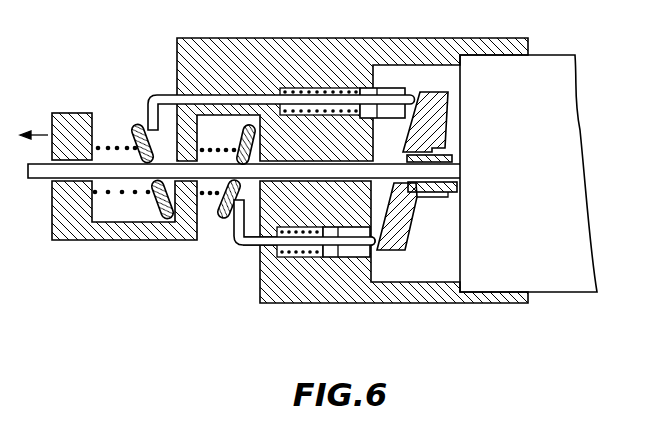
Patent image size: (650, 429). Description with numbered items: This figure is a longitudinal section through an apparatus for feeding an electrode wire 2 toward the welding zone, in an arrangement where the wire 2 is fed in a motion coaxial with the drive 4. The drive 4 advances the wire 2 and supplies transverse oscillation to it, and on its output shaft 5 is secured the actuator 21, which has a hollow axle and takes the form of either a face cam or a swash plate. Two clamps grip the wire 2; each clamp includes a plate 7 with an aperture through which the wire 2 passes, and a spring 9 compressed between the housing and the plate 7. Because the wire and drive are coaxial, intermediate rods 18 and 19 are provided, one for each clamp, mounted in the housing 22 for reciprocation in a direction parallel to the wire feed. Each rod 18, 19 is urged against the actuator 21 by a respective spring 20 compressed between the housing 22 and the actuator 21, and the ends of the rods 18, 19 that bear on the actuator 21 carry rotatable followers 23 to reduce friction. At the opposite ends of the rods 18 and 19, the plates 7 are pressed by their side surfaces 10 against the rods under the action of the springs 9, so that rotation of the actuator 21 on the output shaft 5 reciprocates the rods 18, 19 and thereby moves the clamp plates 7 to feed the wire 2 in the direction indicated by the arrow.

The wire 2 is at (44, 172).
The drive 4 is at (573, 278).
The output shaft 5 is at (454, 162).
The plate 7 is at (154, 201).
The spring 9 is at (116, 146).
The side surface 10 is at (154, 146).
The intermediate rod 18 is at (240, 104).
The intermediate rod 19 is at (244, 246).
The spring 20 is at (323, 88).
The actuator 21 is at (408, 214).
The housing 22 is at (443, 50).
The rotatable follower 23 is at (390, 96).